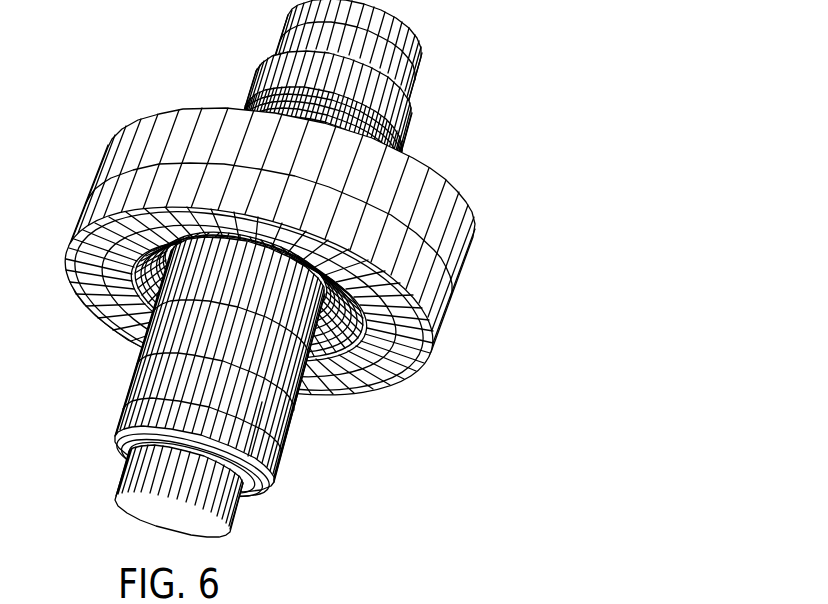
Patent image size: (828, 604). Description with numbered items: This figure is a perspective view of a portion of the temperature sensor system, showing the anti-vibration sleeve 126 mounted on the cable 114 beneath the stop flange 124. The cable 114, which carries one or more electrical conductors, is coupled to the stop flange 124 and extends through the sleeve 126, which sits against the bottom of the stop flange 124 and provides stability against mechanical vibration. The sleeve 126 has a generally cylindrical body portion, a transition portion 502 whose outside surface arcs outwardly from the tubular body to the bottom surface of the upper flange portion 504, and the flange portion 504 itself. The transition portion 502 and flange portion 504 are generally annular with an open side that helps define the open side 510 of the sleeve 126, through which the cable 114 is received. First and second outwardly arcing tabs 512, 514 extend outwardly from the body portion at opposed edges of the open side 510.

The cable 114 is at (214, 277).
The stop flange 124 is at (444, 277).
The anti-vibration sleeve 126 is at (278, 271).
The transition portion 502 is at (116, 306).
The upper flange portion 504 is at (257, 301).
The open side 510 is at (233, 390).
The first outwardly arcing tab 512 is at (242, 500).
The second outwardly arcing tab 514 is at (276, 465).